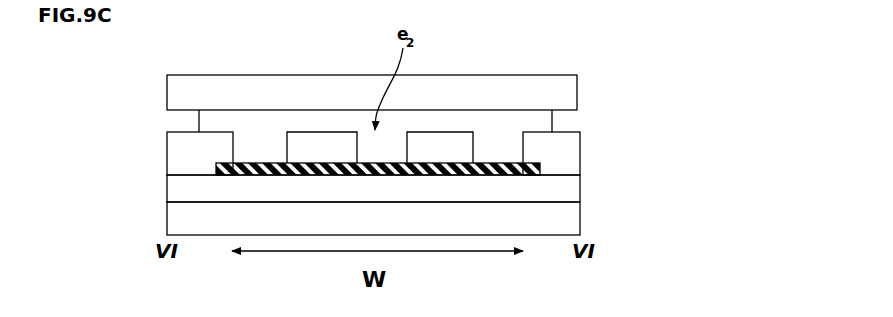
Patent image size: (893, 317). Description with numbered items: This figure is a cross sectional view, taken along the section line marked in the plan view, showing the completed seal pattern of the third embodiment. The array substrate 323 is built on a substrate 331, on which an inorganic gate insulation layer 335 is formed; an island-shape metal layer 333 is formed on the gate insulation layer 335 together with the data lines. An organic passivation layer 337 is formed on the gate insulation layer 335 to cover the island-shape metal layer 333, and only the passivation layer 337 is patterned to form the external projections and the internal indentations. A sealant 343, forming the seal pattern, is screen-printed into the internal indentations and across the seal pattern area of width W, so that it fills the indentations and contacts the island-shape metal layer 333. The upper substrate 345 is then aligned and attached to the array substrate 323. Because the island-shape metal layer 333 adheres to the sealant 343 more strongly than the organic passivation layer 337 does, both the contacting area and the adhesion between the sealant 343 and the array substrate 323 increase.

The upper substrate 345 is at (570, 87).
The sealant 343 is at (545, 118).
The passivation layer 337 is at (570, 157).
The gate insulation layer 335 is at (552, 187).
The substrate 331 is at (570, 225).
The island-shape metal layer 333 is at (507, 167).
The array substrate 323 is at (476, 186).